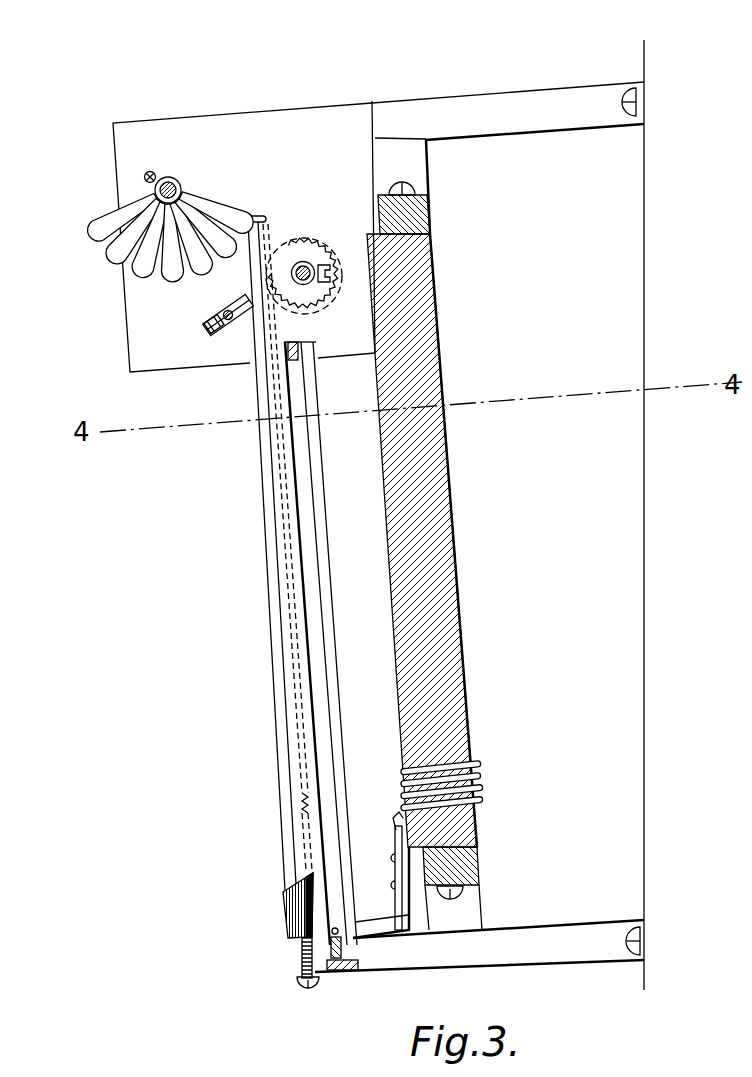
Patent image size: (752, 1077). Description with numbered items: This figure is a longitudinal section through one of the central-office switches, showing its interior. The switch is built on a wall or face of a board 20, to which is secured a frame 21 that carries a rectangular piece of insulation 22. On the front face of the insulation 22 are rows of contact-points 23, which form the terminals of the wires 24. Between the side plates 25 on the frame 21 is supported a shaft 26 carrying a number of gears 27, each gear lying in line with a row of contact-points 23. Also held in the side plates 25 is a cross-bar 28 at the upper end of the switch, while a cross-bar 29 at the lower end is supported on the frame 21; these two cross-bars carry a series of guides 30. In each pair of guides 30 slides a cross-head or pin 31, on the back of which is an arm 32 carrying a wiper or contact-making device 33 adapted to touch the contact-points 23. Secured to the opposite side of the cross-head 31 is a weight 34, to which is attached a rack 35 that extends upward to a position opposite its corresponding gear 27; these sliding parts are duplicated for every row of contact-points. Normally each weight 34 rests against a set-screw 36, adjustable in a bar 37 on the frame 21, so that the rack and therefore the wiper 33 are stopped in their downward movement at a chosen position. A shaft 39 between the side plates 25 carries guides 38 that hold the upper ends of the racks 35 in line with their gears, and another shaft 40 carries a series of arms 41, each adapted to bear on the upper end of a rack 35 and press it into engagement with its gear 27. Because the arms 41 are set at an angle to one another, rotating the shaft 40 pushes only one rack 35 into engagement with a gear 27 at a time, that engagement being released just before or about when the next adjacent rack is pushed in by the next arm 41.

The wall or face of a board 20 is at (646, 240).
The frame 21 is at (471, 137).
The rectangular piece of insulation 22 is at (433, 327).
The contact-points 23 is at (402, 784).
The wires 24 is at (488, 808).
The side plates 25 is at (244, 237).
The shaft 26 is at (306, 269).
The gears 27 is at (297, 239).
The cross-bar 28 is at (301, 341).
The cross-bar 29 is at (336, 968).
The guides 30 is at (304, 630).
The cross-head or pin 31 is at (340, 936).
The arm 32 is at (392, 923).
The wiper or contact-making device 33 is at (395, 838).
The weight 34 is at (287, 908).
The rack 35 is at (268, 464).
The set-screws 36 is at (301, 952).
The bar 37 is at (296, 978).
The guides 38 is at (240, 326).
The shaft 39 is at (207, 323).
The shaft 40 is at (176, 186).
The arms 41 is at (143, 255).